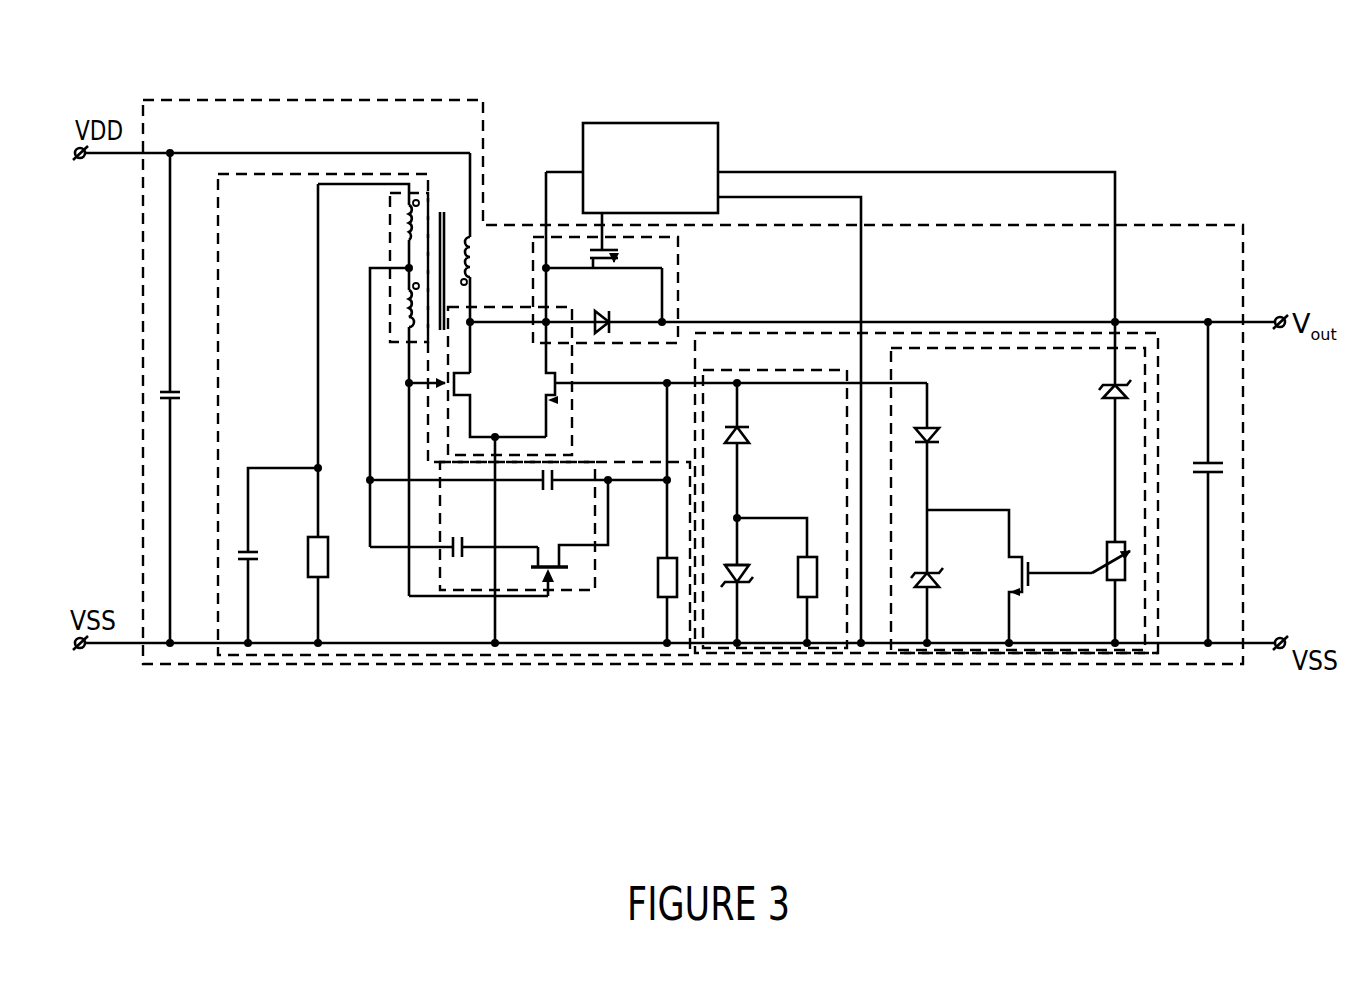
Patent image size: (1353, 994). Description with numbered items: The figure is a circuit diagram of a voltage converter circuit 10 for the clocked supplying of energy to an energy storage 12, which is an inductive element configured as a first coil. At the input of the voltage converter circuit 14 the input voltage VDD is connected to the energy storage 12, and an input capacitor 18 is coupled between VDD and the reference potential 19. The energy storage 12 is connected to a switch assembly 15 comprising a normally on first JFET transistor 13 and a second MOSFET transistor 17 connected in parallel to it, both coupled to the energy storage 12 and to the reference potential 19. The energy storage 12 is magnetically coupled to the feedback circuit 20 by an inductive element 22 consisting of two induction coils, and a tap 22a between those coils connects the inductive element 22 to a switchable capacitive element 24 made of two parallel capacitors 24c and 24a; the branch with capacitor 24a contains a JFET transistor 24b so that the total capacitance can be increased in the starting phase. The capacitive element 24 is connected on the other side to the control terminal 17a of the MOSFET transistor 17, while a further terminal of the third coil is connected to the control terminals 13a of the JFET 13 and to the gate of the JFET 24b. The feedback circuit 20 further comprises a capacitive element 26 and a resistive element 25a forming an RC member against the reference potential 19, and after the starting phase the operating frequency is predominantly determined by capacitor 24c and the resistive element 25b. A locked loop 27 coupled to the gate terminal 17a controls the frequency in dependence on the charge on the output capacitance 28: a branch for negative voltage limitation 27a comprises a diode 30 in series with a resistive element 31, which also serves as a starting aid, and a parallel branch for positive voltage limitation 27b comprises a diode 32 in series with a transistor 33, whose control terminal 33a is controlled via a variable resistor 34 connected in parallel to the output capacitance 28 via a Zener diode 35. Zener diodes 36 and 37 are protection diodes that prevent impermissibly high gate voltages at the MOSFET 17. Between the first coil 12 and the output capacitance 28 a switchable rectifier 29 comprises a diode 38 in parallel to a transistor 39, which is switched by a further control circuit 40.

The voltage converter circuit 10 is at (345, 82).
The energy storage 12 is at (472, 256).
The first JFET transistor 13 is at (455, 412).
The control terminal of the JFET 13a is at (462, 396).
The input of the voltage converter circuit 14 is at (171, 150).
The switch assembly 15 is at (520, 307).
The second MOSFET transistor 17 is at (557, 402).
The control terminal of the NMOS transistor 17a is at (565, 376).
The input capacitor 18 is at (158, 396).
The reference potential 19 is at (165, 652).
The feedback circuit 20 is at (268, 172).
The inductive element 22 is at (392, 228).
The tap 22a is at (407, 268).
The switchable capacitive element 24 is at (580, 592).
The capacitor C4 24a is at (458, 568).
The JFET transistor T4 24b is at (567, 573).
The capacitor C3 24c is at (548, 500).
The resistive element 25a is at (312, 537).
The resistive element R3 25b is at (670, 600).
The capacitive element C2 26 is at (245, 550).
The locked loop 27 is at (1160, 605).
The branch for negative voltage limitation 27a is at (810, 600).
The branch for positive voltage limitation 27b is at (1078, 657).
The output capacitance 28 is at (1222, 476).
The switchable rectifier 29 is at (680, 257).
The diode D1 30 is at (748, 445).
The resistive element R1 31 is at (848, 648).
The diode 32 is at (930, 447).
The transistor 33 is at (1018, 600).
The control terminal of the transistor 33a is at (1030, 577).
The variable resistor 34 is at (1125, 585).
The Zener diode 35 is at (1100, 400).
The Zener diode 36 is at (745, 585).
The Zener diode 37 is at (932, 588).
The diode 38 is at (612, 316).
The transistor T3 39 is at (618, 252).
The further control circuit 40 is at (682, 123).